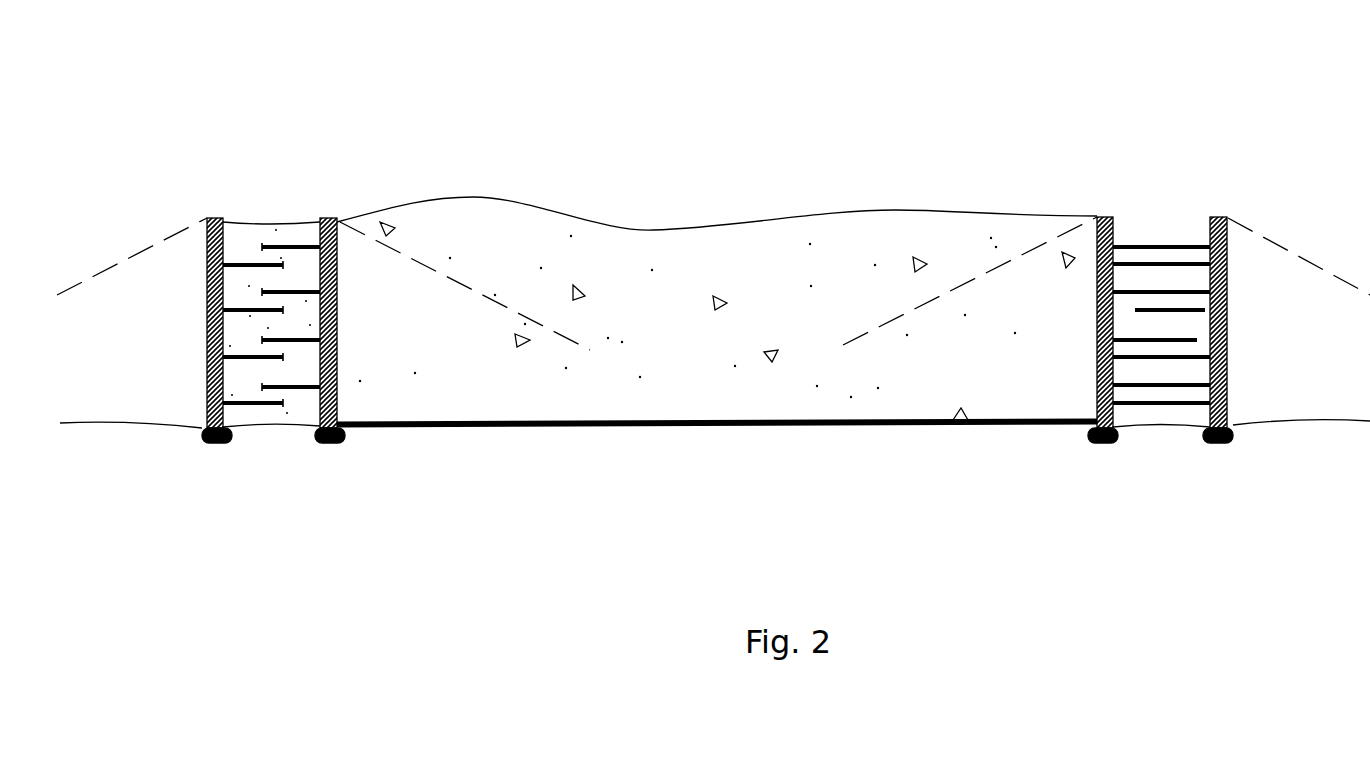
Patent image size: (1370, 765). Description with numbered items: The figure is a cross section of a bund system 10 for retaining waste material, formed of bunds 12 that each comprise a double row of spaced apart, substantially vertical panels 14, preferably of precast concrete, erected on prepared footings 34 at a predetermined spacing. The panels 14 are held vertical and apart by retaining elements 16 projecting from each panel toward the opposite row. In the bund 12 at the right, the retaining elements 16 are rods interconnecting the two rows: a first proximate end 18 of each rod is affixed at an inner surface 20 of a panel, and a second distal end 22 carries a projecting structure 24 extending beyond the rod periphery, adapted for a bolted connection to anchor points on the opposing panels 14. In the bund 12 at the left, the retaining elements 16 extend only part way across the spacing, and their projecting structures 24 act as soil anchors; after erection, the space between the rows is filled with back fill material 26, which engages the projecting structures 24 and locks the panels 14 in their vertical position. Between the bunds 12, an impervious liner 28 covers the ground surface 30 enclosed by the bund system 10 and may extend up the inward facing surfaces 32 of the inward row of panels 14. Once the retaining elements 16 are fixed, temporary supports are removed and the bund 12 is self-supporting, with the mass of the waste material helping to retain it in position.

The bund system 10 is at (807, 155).
The bund 12 is at (721, 290).
The panel 14 is at (207, 320).
The retaining element 16 is at (281, 242).
The first proximate end 18 is at (1116, 237).
The inner surface 20 is at (1100, 296).
The second distal end 22 is at (1206, 231).
The projecting structure 24 is at (265, 291).
The back fill material 26 is at (247, 243).
The impervious liner 28 is at (718, 419).
The ground surface 30 is at (678, 427).
The inward facing surface 32 is at (336, 346).
The footing 34 is at (317, 448).